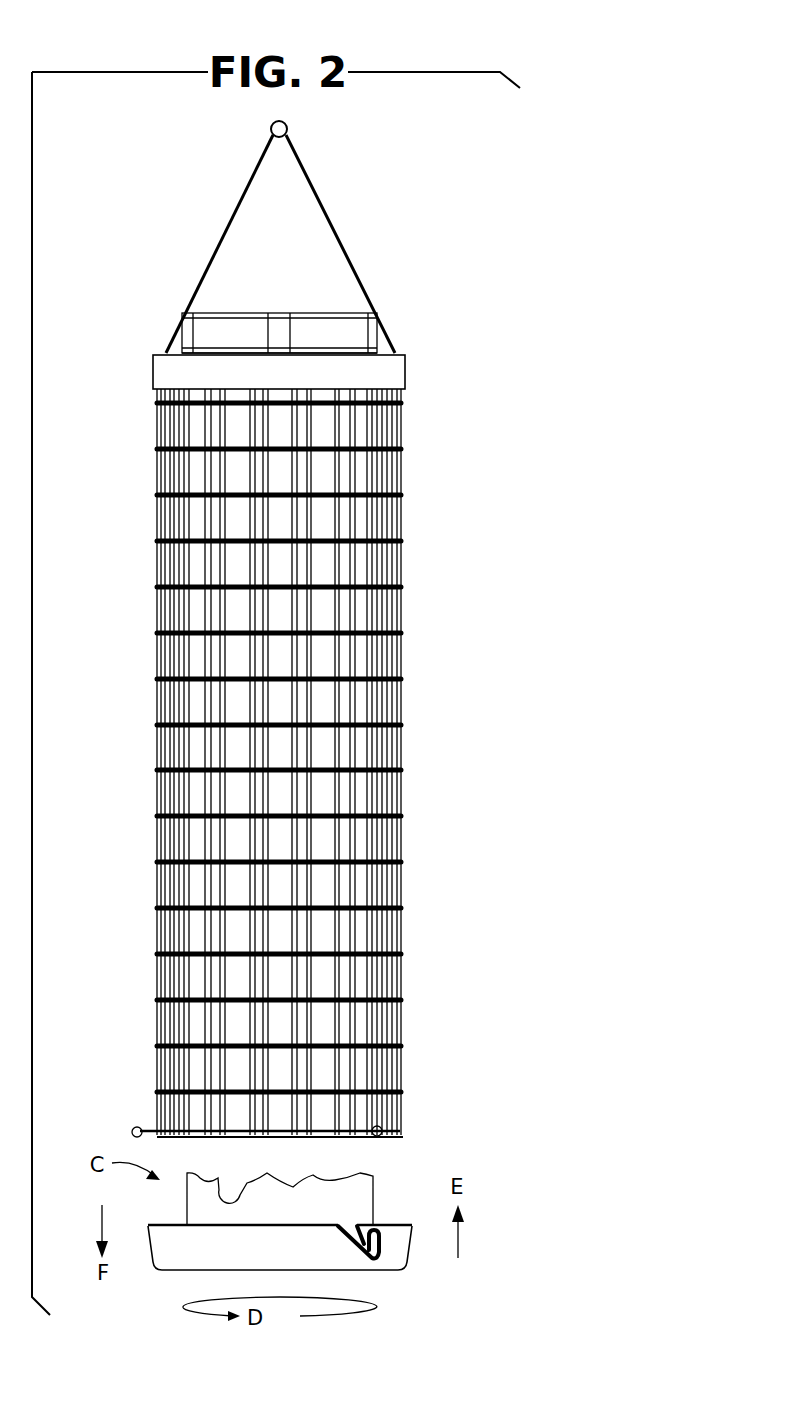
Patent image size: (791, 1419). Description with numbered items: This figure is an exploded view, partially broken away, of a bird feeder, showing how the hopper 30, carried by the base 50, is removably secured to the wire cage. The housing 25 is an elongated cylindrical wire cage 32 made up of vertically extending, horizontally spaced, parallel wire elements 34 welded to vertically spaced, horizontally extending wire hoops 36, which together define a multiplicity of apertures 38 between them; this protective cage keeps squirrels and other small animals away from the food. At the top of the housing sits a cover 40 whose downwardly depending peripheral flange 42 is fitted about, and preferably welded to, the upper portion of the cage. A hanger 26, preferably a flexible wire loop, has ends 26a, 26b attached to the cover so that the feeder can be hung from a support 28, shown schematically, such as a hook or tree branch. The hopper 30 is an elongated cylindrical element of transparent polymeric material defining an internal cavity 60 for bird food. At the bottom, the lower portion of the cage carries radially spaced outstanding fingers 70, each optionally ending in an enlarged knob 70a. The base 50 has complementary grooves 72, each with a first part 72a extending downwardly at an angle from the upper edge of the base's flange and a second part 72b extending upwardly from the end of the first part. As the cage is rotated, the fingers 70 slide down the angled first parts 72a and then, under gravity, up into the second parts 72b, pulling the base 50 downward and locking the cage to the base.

The housing 25 is at (272, 762).
The hanger 26 is at (279, 244).
The hanger end 26a is at (397, 352).
The hanger end 26b is at (167, 352).
The support 28 is at (287, 124).
The hopper 30 is at (280, 1184).
The wire cage 32 is at (403, 857).
The wire elements 34 is at (370, 623).
The wire hoops 36 is at (379, 449).
The apertures 38 is at (190, 660).
The cover 40 is at (326, 332).
The peripheral flange 42 is at (395, 373).
The base 50 is at (266, 1274).
The internal cavity 60 is at (230, 1193).
The fingers 70 is at (155, 1123).
The enlarged knob 70a is at (132, 1128).
The grooves 72 is at (353, 1272).
The first part 72a is at (355, 1245).
The second part 72b is at (380, 1238).